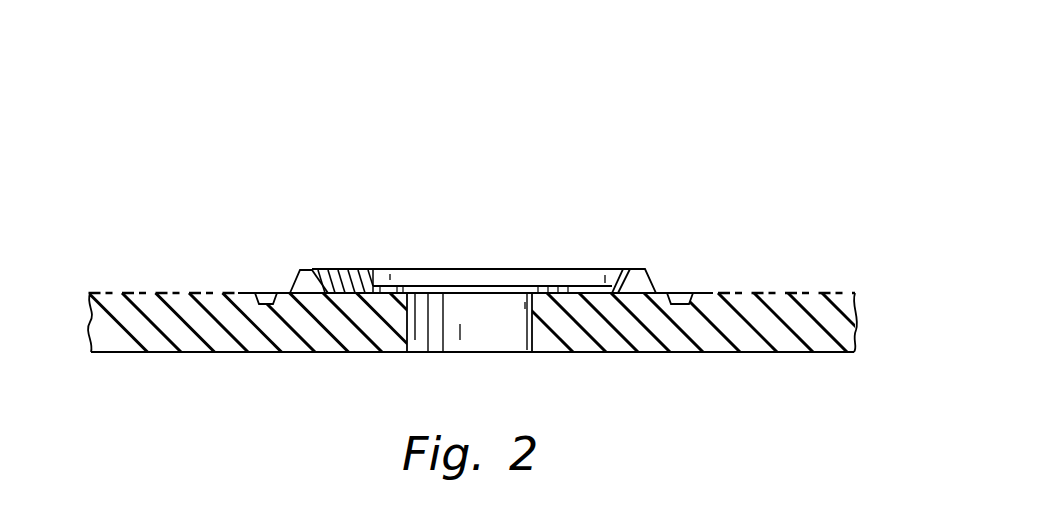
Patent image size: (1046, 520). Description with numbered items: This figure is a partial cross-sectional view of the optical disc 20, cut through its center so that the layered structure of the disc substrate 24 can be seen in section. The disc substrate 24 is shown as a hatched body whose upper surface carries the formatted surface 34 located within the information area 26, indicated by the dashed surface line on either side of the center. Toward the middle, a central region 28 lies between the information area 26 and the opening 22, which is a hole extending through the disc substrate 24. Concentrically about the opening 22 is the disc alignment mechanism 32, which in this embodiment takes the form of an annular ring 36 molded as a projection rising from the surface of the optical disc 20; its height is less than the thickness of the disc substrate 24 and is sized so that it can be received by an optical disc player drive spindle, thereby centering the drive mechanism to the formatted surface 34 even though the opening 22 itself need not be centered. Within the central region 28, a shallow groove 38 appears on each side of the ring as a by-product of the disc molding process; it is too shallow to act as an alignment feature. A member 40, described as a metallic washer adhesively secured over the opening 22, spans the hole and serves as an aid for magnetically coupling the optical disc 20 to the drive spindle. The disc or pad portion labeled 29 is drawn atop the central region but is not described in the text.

The optical disc 20 is at (673, 116).
The opening 22 is at (424, 342).
The disc substrate 24 is at (830, 328).
The information area 26 is at (153, 257).
The central region 28 is at (700, 207).
The disc / pad 29 is at (398, 213).
The disc alignment mechanism 32 is at (258, 223).
The formatted surface 34 is at (148, 290).
The annular ring 36 is at (307, 272).
The groove 38 is at (265, 292).
The member 40 is at (522, 287).